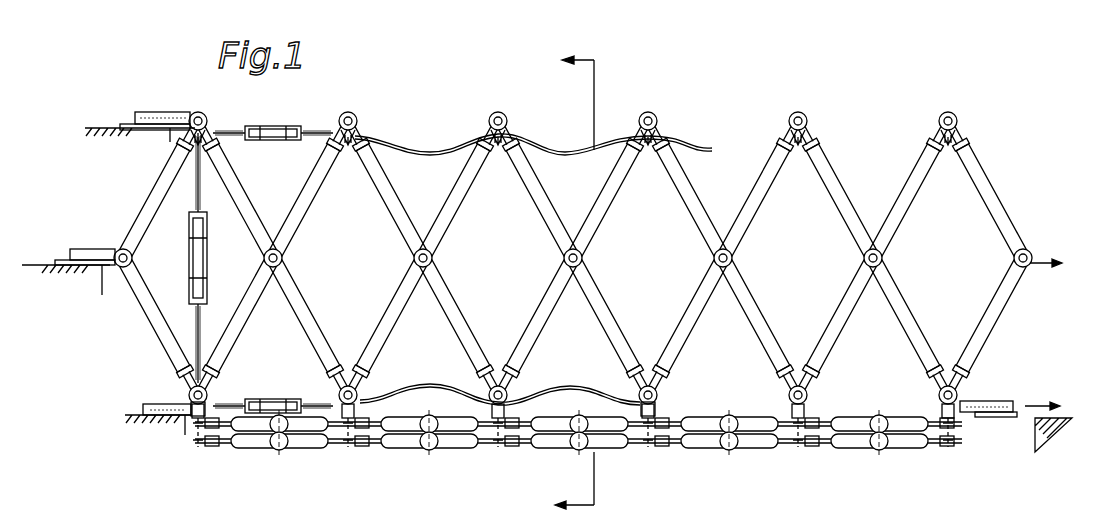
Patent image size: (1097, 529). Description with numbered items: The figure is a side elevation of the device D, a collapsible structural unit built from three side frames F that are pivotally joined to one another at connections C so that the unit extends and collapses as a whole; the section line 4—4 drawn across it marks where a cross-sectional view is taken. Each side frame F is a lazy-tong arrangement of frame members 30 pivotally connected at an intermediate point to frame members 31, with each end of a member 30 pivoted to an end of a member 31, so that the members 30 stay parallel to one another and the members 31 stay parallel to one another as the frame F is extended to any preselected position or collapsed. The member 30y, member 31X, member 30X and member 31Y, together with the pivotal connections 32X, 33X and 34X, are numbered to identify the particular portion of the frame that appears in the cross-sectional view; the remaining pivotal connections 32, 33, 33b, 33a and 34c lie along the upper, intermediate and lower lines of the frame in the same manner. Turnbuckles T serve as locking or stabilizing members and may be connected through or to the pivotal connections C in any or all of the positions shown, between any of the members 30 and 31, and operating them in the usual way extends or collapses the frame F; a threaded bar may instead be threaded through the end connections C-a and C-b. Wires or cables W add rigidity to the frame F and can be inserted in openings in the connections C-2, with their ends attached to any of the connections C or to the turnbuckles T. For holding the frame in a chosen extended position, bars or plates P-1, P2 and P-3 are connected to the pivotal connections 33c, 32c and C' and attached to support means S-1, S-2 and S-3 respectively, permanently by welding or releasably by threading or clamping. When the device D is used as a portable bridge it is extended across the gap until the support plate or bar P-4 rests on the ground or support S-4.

The pivotal connection 33c is at (201, 114).
The upper pivot 33 is at (356, 112).
The pivotal connection 33X is at (499, 111).
The upper pivot 33b is at (790, 112).
The end upper pivot 33a is at (956, 112).
The pivotal connection 32c is at (124, 248).
The intermediate pivot 32 is at (283, 259).
The pivotal connection 32X is at (583, 258).
The end lower pivot 34c is at (189, 396).
The pivotal connection 34X is at (507, 394).
The frame member 31 is at (231, 176).
The frame member 31X is at (540, 190).
The frame member 31Y is at (447, 298).
The frame member 30 is at (229, 348).
The frame member 30X is at (543, 311).
The frame member 30y is at (449, 214).
The connection C-2 is at (500, 145).
The end connection C-b is at (800, 145).
The end connection C-a is at (946, 145).
The pivotal connection C is at (675, 396).
The pivotal connection C' is at (215, 396).
The turnbuckle T is at (291, 124).
The wire or cable W is at (442, 140).
The device D is at (1040, 218).
The side frame F is at (1020, 336).
The bar or plate P-1 is at (176, 110).
The bar or plate P2 is at (78, 248).
The bar or plate P-3 is at (175, 424).
The support plate or bar P-4 is at (1002, 400).
The support means S-1 is at (112, 126).
The support means S-2 is at (88, 270).
The support means S-3 is at (166, 422).
The ground or support S-4 is at (1052, 444).
The section line 4- 4 is at (583, 282).